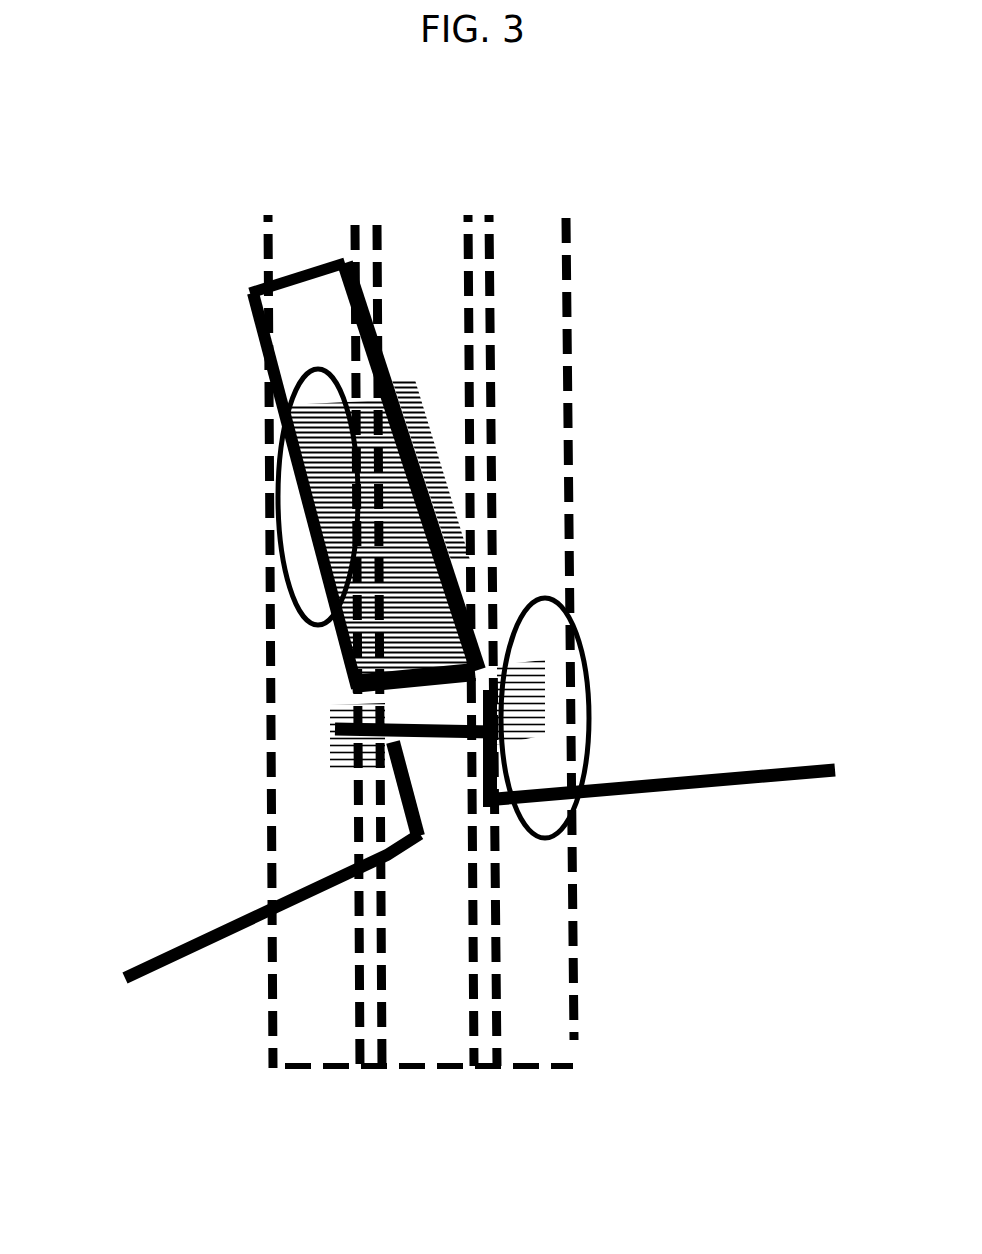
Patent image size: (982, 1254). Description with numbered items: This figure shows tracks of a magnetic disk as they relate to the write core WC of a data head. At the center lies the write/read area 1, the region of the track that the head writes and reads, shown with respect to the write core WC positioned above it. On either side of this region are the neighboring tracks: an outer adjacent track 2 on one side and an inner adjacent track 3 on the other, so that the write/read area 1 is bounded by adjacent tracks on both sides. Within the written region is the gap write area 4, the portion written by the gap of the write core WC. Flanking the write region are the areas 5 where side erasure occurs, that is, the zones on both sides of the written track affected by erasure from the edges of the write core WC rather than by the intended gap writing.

The write/read area 1 is at (425, 1021).
The outer adjacent track 2 is at (309, 973).
The inner adjacent track 3 is at (543, 905).
The gap write area 4 is at (360, 724).
The side erasure areas 5 is at (268, 492).
The write core WC is at (720, 758).